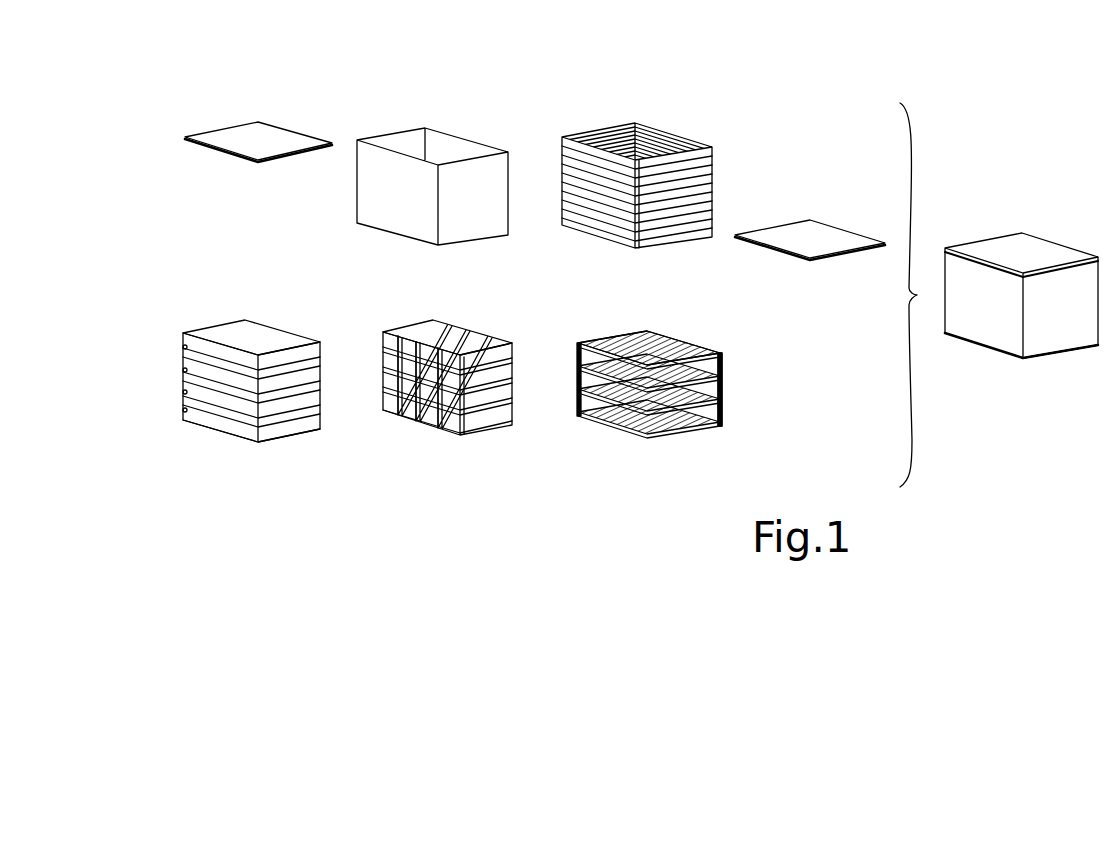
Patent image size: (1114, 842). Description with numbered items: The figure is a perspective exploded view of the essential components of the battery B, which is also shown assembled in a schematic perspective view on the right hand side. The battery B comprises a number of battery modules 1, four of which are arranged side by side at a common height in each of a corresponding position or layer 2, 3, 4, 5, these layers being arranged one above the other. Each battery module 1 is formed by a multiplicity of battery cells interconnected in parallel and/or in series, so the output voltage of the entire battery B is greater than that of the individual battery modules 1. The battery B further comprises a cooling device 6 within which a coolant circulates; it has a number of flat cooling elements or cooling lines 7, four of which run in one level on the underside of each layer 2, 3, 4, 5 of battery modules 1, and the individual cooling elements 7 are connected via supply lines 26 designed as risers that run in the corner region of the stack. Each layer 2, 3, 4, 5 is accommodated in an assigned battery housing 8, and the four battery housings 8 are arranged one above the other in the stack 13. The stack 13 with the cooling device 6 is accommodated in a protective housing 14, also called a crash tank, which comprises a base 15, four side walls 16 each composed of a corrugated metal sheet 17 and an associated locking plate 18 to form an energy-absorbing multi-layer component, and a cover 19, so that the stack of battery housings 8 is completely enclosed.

The battery module 1 is at (393, 410).
The position (layer) of battery modules 2 is at (520, 342).
The position (layer) of battery modules 3 is at (520, 362).
The position (layer) of battery modules 4 is at (520, 383).
The position (layer) of battery modules 5 is at (520, 410).
The cooling device 6 is at (668, 442).
The cooling element / cooling line 7 is at (625, 340).
The battery housing 8 is at (176, 342).
The stack 13 is at (236, 448).
The protective housing 14 is at (813, 108).
The base 15 is at (820, 232).
The side wall 16 is at (1058, 330).
The corrugated metal sheet 17 is at (608, 127).
The locking plate 18 is at (385, 130).
The cover 19 is at (275, 138).
The supply line 26 is at (725, 385).
The battery B is at (1058, 200).